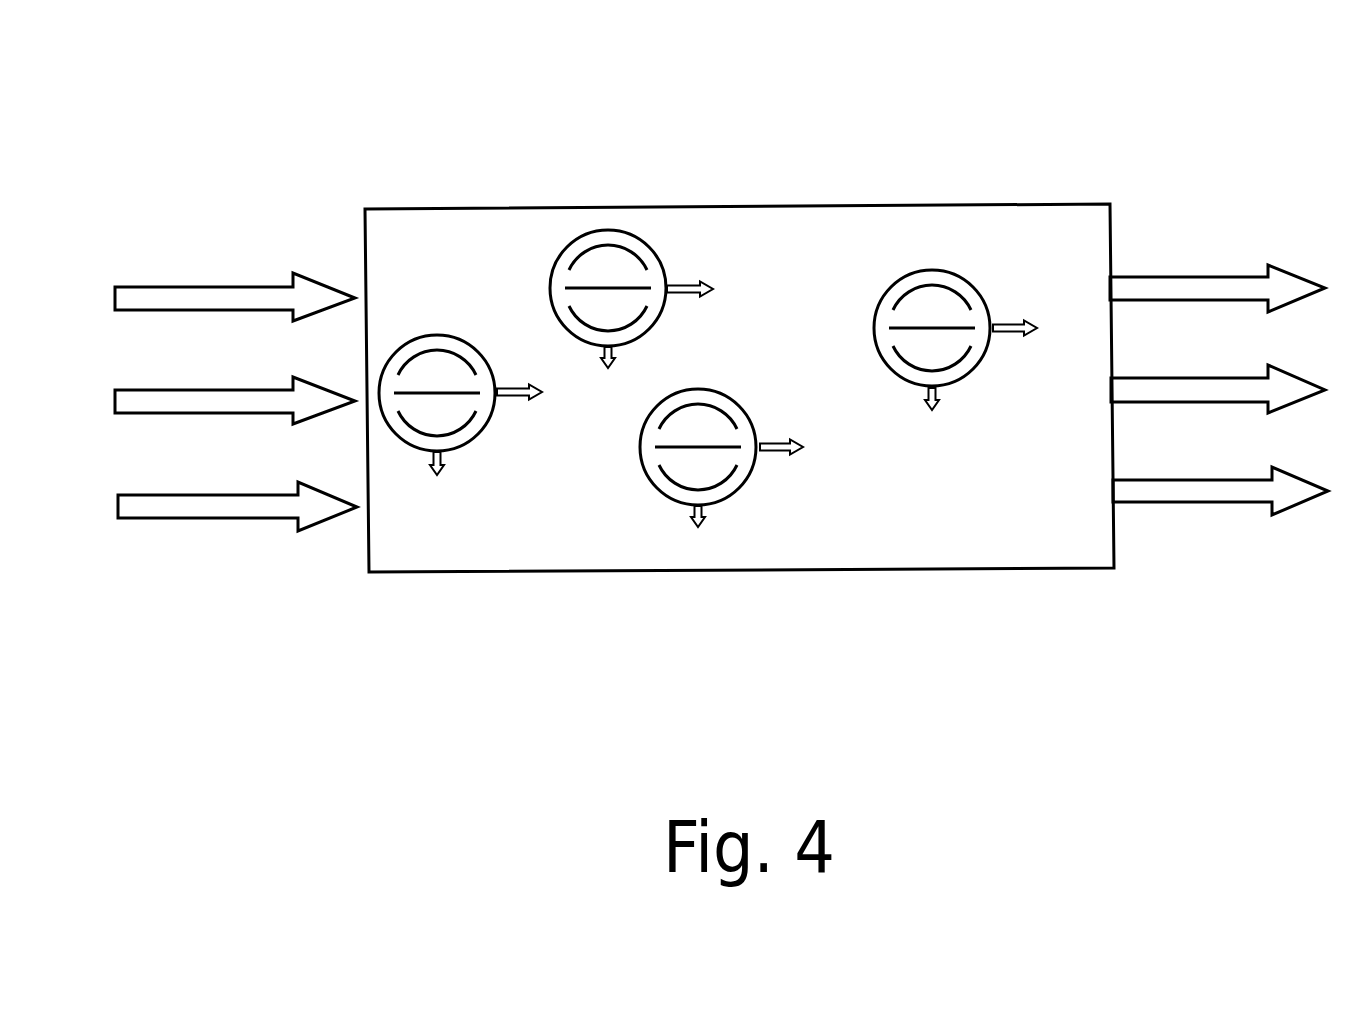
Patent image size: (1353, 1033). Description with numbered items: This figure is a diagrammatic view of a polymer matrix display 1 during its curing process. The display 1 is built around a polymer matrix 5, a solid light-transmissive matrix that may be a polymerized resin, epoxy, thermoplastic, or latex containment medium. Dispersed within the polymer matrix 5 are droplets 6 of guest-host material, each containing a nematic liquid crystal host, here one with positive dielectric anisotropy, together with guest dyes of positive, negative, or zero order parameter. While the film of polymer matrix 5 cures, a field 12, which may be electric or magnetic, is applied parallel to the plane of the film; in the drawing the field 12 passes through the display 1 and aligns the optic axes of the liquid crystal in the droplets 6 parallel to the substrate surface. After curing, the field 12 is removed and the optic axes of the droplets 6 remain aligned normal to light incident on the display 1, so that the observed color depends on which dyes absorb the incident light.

The polymer matrix display 1 is at (685, 187).
The polymer matrix 5 is at (1008, 488).
The droplets 6 is at (660, 460).
The field 12 is at (1177, 285).